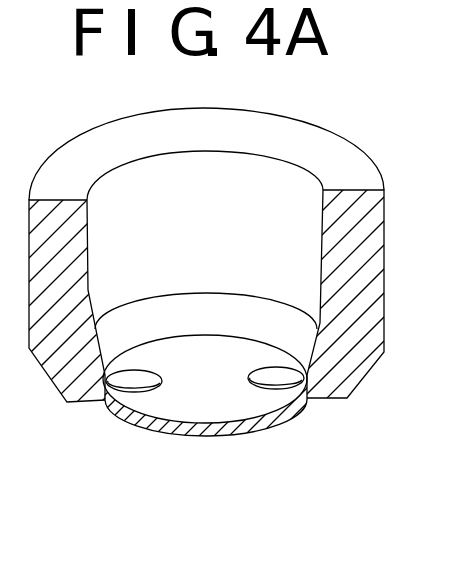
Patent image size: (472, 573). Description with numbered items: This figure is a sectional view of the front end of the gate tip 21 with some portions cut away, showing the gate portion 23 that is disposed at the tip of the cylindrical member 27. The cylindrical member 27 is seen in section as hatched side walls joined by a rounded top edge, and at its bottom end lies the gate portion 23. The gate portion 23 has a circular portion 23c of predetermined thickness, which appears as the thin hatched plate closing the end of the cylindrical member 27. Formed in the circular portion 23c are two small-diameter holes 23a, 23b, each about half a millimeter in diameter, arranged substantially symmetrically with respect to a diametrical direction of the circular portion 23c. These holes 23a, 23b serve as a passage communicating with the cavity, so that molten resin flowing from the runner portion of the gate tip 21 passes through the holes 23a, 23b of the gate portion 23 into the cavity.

The gate tip 21 is at (391, 292).
The cylindrical member 27 is at (370, 223).
The gate portion 23 is at (246, 439).
The small-diameter hole 23a is at (130, 385).
The small-diameter hole 23b is at (275, 383).
The circular portion 23c is at (185, 408).